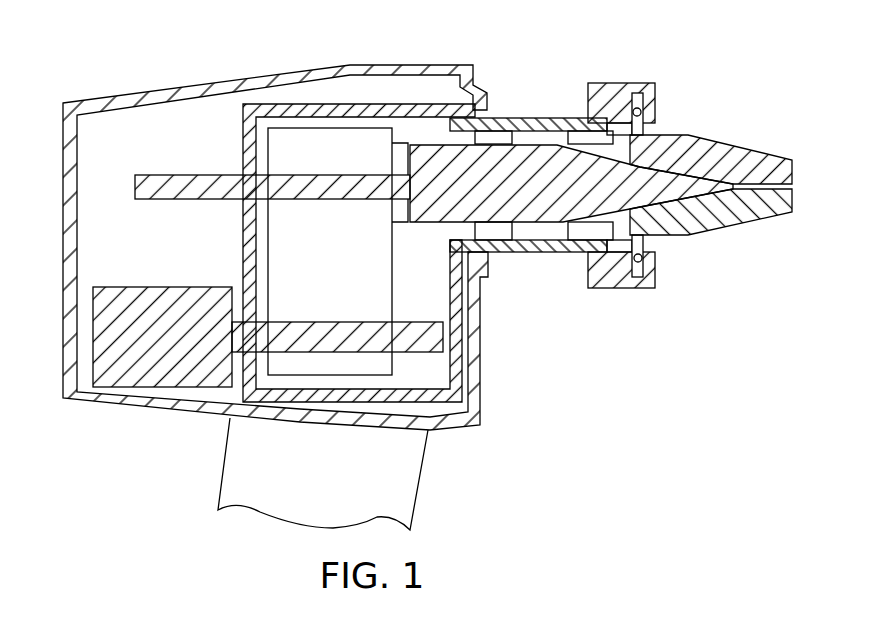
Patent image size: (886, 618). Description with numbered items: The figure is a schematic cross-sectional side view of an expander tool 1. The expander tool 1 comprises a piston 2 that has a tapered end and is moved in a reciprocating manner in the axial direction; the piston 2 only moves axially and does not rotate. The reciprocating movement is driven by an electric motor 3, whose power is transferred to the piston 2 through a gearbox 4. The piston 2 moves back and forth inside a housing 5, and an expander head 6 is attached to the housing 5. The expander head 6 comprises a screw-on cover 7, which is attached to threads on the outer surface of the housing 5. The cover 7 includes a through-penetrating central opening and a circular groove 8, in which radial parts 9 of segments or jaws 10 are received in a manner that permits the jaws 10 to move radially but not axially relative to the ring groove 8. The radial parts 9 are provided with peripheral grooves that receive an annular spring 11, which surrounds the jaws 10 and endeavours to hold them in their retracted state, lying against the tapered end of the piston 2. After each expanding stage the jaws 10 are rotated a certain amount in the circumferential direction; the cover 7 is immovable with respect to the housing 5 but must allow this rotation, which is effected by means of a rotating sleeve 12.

The expander tool 1 is at (531, 66).
The piston 2 is at (553, 175).
The electric motor 3 is at (172, 347).
The gearbox 4 is at (350, 292).
The housing 5 is at (513, 118).
The expander head 6 is at (717, 158).
The screw-on cover 7 is at (618, 93).
The circular groove 8 is at (643, 112).
The radial parts 9 is at (645, 243).
The jaws 10 is at (748, 170).
The annular spring 11 is at (640, 268).
The rotating sleeve 12 is at (533, 228).